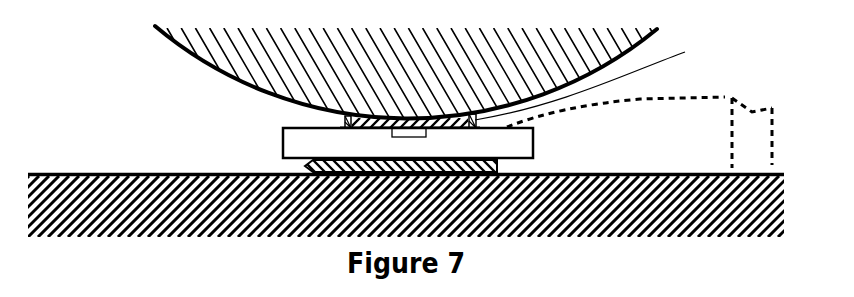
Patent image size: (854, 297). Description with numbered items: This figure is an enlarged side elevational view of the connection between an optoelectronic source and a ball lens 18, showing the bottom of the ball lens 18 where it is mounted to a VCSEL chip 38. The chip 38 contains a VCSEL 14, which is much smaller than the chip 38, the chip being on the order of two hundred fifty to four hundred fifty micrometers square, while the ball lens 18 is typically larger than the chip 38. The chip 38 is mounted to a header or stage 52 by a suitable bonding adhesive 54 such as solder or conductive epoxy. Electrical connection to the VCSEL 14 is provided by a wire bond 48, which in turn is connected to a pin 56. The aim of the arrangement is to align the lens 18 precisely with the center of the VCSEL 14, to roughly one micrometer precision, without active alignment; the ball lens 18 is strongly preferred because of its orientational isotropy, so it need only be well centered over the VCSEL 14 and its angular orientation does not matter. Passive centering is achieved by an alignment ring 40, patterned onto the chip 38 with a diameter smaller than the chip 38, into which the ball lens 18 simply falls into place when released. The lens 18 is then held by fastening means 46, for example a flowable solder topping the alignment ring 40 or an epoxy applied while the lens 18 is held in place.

The VCSEL 14 is at (426, 137).
The ball lens 18 is at (228, 50).
The VCSEL chip 38 is at (298, 145).
The alignment ring 40 is at (342, 122).
The fastening means 46 is at (595, 78).
The wire bond 48 is at (645, 97).
The header or stage 52 is at (68, 195).
The bonding adhesive 54 is at (315, 165).
The pin 56 is at (757, 127).